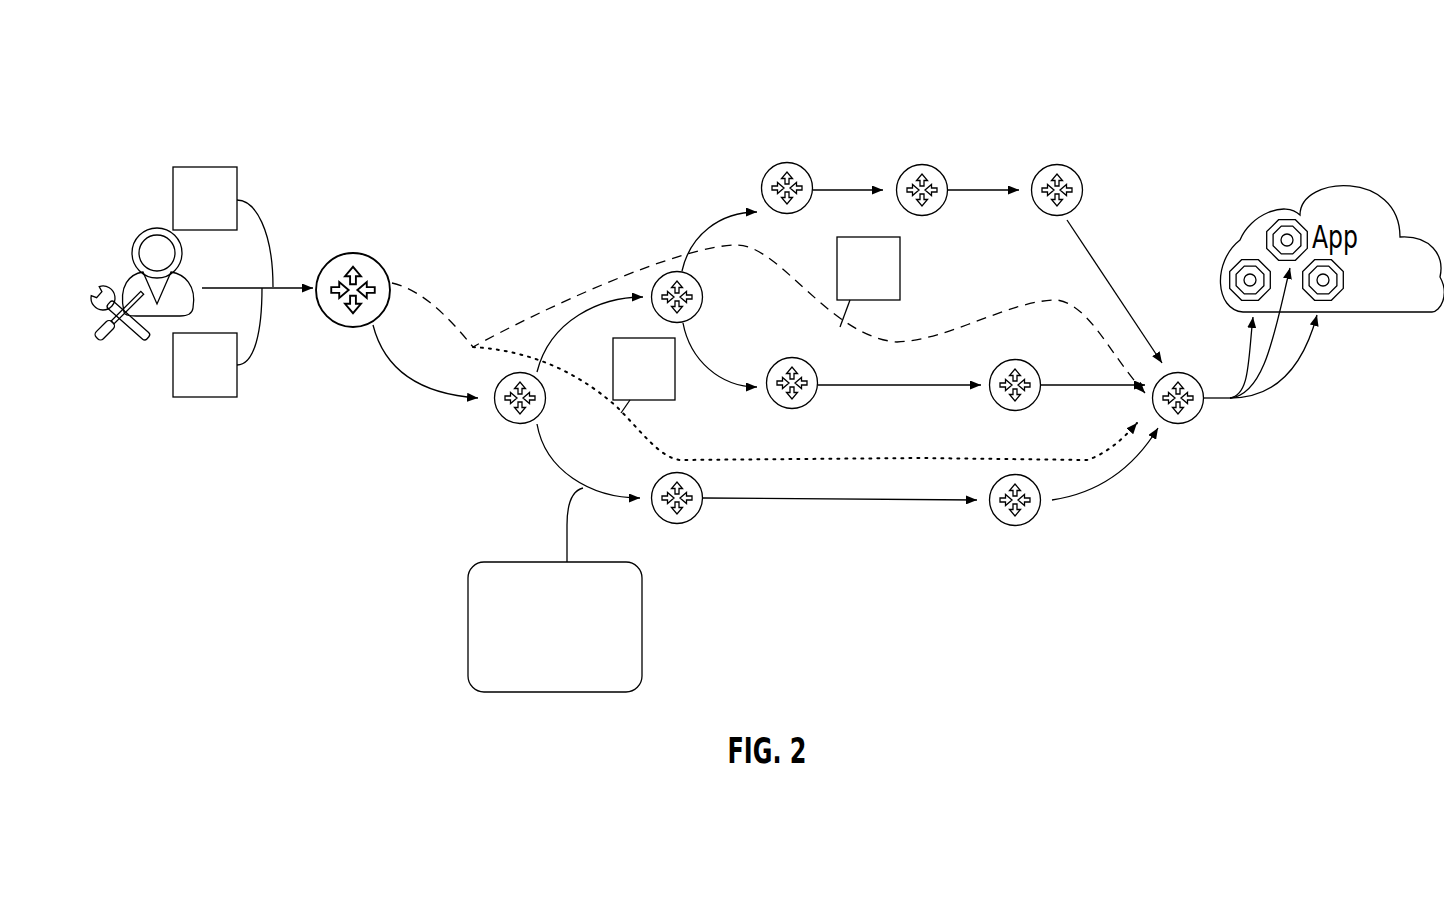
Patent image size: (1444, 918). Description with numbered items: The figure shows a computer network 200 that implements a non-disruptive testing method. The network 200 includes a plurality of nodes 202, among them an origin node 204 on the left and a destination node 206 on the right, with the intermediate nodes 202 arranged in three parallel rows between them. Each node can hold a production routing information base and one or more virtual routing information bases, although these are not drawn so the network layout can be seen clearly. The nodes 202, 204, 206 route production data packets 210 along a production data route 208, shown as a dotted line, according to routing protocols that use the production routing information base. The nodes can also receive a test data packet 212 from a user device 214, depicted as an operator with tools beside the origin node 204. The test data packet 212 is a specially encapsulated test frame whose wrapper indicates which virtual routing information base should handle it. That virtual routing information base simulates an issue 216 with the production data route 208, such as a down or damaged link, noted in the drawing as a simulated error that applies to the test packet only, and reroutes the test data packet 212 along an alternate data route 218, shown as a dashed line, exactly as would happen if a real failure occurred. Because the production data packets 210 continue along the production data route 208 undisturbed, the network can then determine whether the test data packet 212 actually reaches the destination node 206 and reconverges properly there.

The computer network 200 is at (552, 72).
The nodes 202 is at (794, 345).
The origin node 204 is at (364, 253).
The destination node 206 is at (1177, 424).
The production data route 208 is at (922, 458).
The production data packets 210 is at (207, 400).
The test data packet 212 is at (900, 265).
The user device 214 is at (208, 165).
The simulated issue 216 is at (642, 607).
The alternate data route 218 is at (637, 272).